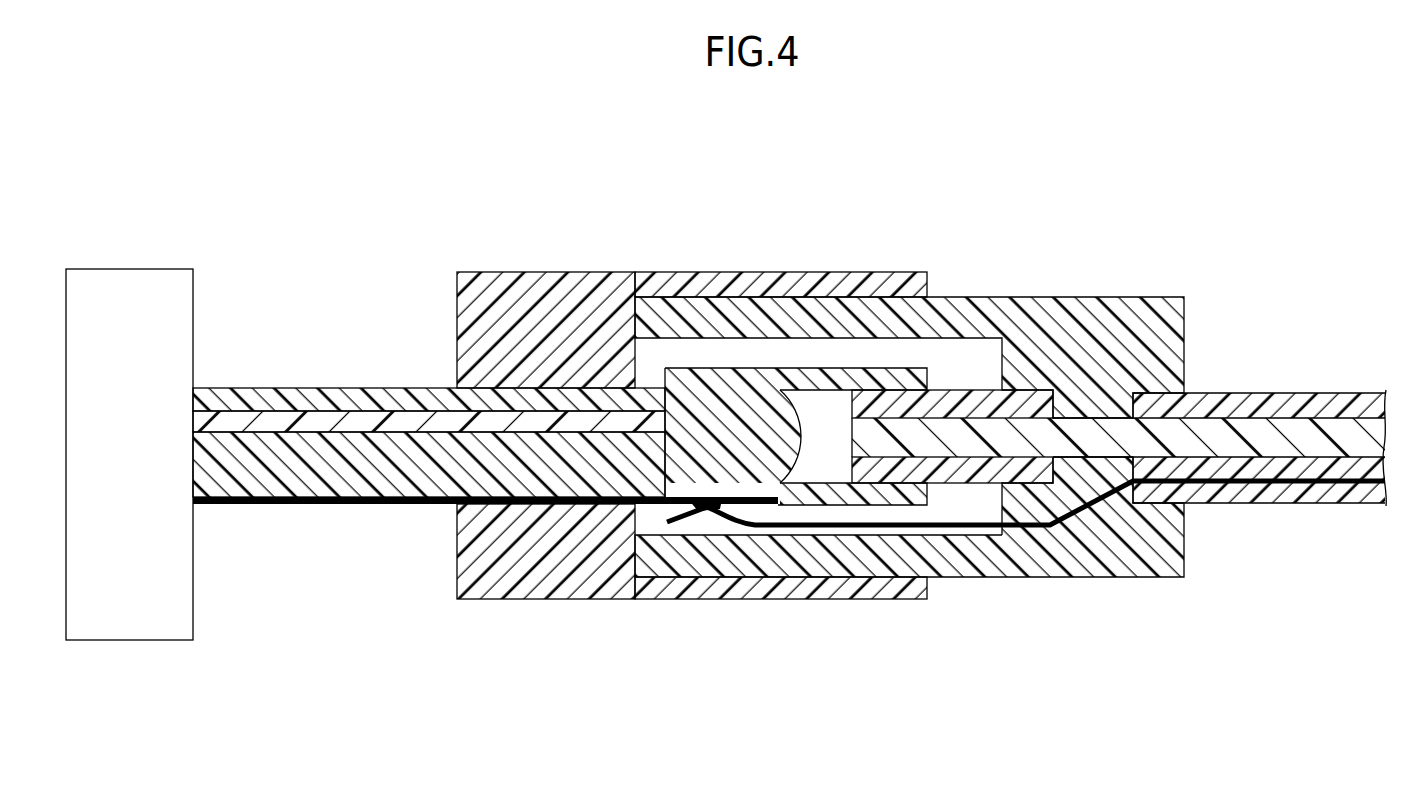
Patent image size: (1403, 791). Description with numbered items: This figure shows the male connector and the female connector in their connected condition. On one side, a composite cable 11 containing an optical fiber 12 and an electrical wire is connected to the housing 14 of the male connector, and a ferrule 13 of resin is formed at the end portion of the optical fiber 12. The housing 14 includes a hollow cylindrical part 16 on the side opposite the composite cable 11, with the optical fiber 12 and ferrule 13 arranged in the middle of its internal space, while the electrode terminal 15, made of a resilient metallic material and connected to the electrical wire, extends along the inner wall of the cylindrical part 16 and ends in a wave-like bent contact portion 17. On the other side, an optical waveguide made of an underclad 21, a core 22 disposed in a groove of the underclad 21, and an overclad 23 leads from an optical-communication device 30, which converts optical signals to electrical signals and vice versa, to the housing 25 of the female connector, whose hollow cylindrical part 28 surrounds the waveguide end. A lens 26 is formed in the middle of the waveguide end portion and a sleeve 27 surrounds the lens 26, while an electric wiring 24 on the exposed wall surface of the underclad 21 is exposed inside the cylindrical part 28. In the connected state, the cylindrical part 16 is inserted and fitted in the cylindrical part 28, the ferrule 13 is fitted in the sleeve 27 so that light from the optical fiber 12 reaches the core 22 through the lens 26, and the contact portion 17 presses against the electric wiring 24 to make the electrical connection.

The composite cable 11 is at (1290, 392).
The optical fiber 12 is at (1101, 436).
The ferrule 13 is at (1042, 400).
The housing 14 is at (1147, 566).
The electrode terminal 15 is at (1061, 528).
The cylindrical part 16 is at (862, 565).
The contact portion 17 is at (712, 512).
The underclad 21 is at (343, 470).
The core 22 is at (286, 420).
The overclad 23 is at (360, 400).
The electric wiring 24 is at (410, 506).
The housing 25 is at (578, 600).
The lens 26 is at (795, 437).
The sleeve 27 is at (928, 378).
The cylindrical part 28 is at (810, 288).
The optical-communication device 30 is at (179, 268).